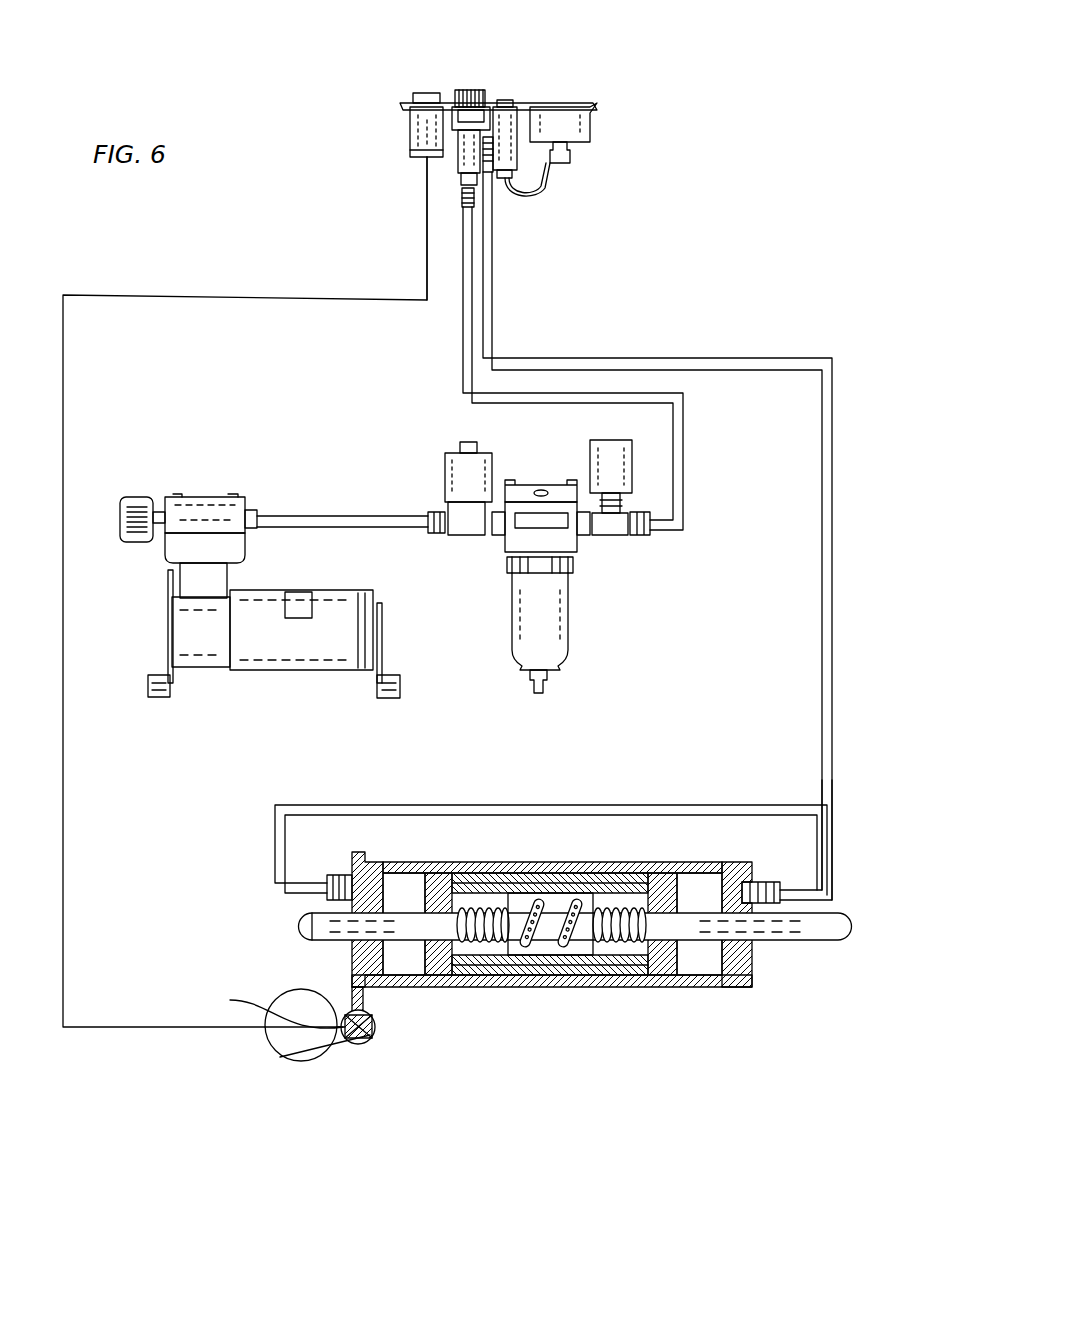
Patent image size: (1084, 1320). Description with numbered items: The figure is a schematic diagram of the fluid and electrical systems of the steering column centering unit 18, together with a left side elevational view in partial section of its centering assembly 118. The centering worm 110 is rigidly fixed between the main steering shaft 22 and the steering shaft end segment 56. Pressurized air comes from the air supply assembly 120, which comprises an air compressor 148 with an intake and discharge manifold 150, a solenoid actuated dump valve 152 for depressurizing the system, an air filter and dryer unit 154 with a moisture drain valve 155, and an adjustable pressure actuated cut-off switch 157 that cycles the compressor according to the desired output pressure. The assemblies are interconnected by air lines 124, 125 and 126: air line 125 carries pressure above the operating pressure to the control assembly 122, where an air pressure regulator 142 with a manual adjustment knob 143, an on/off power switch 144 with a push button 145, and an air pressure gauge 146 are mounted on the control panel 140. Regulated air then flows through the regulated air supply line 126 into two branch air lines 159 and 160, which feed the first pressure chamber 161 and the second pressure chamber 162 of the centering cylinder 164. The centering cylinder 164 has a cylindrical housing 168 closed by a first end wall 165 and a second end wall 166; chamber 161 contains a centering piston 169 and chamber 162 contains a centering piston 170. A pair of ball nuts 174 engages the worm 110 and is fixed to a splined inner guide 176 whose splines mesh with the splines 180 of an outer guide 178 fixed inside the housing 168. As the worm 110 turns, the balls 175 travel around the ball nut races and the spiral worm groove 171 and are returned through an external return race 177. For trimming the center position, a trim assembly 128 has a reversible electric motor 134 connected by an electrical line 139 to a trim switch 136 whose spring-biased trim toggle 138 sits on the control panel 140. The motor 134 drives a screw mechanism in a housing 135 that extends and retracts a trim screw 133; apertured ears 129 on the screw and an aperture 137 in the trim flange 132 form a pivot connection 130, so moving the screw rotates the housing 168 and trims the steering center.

The centering unit 18 is at (778, 277).
The steering shaft 22 is at (828, 947).
The steering shaft end segment 56 is at (312, 922).
The centering worm 110 is at (497, 987).
The centering assembly 118 is at (562, 1012).
The air supply assembly 120 is at (293, 460).
The control assembly 122 is at (577, 203).
The air line 124 is at (377, 513).
The air line 125 is at (683, 478).
The regulated air supply line 126 is at (832, 405).
The trim assembly 128 is at (255, 1045).
The apertured ears 129 is at (405, 1100).
The pivot connection 130 is at (385, 1022).
The trim flange 132 is at (352, 1003).
The trim screw 133 is at (366, 1046).
The reversible electric motor 134 is at (282, 1062).
The housing 135 is at (310, 1062).
The trim switch 136 is at (410, 150).
The aperture 137 is at (328, 1055).
The trim toggle 138 is at (412, 100).
The electrical line 139 is at (63, 860).
The control panel 140 is at (520, 102).
The air pressure regulator 142 is at (460, 170).
The manual adjustment knob 143 is at (463, 90).
The on/off power switch 144 is at (507, 180).
The push button 145 is at (503, 100).
The air pressure gauge 146 is at (577, 103).
The air compressor 148 is at (253, 670).
The intake and discharge manifold 150 is at (200, 498).
The solenoid actuated dump valve 152 is at (445, 463).
The air filter and dryer unit 154 is at (568, 603).
The moisture drain valve 155 is at (548, 680).
The adjustable pressure actuated cut-off switch 157 is at (590, 450).
The branch air line 159 is at (832, 850).
The branch air line 160 is at (680, 805).
The first pressure chamber 161 is at (705, 975).
The second pressure chamber 162 is at (415, 963).
The centering cylinder 164 is at (653, 992).
The first end wall 165 is at (750, 965).
The second end wall 166 is at (352, 946).
The cylindrical housing 168 is at (678, 990).
The centering piston 169 is at (735, 880).
The centering piston 170 is at (420, 893).
The spiral worm groove 171 is at (607, 975).
The ball nuts 174 is at (497, 905).
The balls 175 is at (532, 987).
The splined inner guide 176 is at (473, 897).
The external return race 177 is at (540, 897).
The outer guide 178 is at (660, 877).
The splines 180 is at (473, 987).